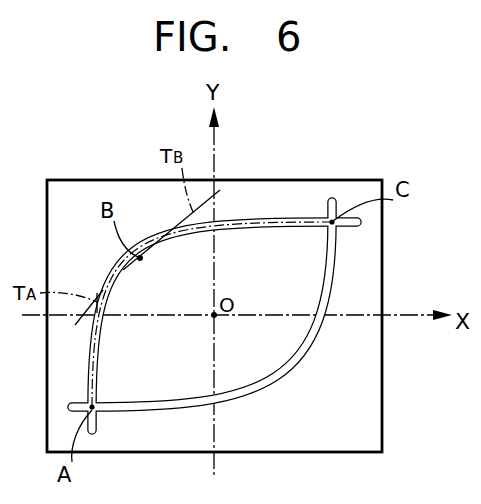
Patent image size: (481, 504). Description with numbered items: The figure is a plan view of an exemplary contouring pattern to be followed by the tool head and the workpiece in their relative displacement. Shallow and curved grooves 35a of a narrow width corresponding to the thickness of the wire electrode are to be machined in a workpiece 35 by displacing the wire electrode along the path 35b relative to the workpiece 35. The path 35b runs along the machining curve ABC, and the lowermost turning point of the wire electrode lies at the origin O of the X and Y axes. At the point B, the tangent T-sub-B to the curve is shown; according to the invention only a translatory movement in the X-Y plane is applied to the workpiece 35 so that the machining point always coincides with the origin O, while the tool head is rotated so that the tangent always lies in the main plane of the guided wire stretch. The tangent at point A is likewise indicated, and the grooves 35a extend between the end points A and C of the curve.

The workpiece 35 is at (367, 395).
The shallow and curved grooves 35a is at (298, 213).
The path 35b is at (242, 223).